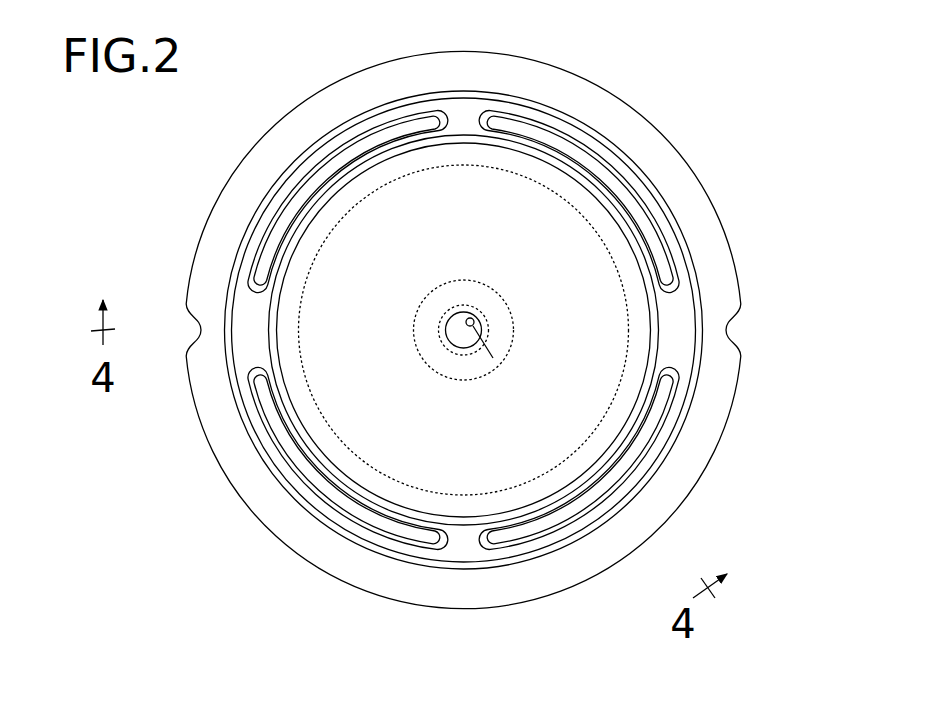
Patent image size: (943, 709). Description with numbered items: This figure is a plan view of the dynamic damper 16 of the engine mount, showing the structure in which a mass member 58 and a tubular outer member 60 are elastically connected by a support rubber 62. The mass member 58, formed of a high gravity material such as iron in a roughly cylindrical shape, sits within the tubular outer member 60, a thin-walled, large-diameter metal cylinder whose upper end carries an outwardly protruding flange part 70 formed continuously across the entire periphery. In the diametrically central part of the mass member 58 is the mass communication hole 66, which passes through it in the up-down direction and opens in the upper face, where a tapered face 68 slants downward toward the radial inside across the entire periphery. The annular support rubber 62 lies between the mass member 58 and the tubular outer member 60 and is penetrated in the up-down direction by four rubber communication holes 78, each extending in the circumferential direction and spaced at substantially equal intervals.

The dynamic damper 16 is at (708, 98).
The mass member 58 is at (467, 526).
The tubular outer member 60 is at (250, 522).
The support rubber 62 is at (678, 340).
The mass communication hole 66 is at (420, 330).
The tapered face 68 is at (488, 218).
The flange part 70 is at (215, 433).
The rubber communication holes 78 is at (333, 146).